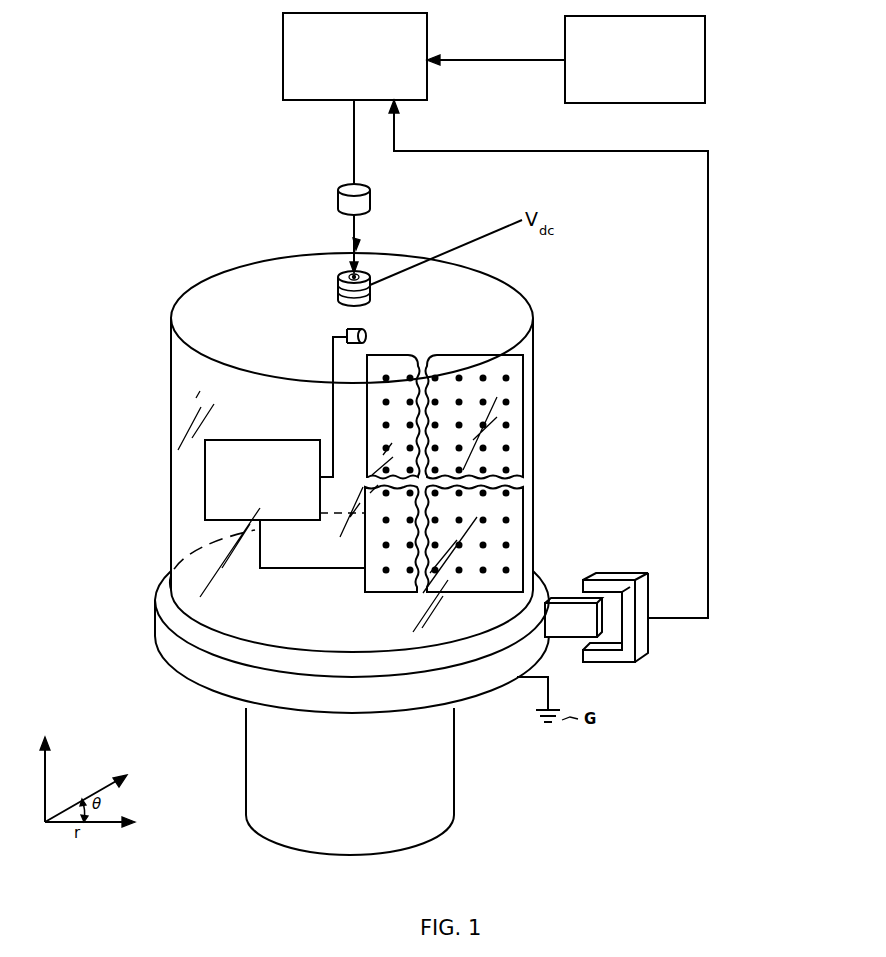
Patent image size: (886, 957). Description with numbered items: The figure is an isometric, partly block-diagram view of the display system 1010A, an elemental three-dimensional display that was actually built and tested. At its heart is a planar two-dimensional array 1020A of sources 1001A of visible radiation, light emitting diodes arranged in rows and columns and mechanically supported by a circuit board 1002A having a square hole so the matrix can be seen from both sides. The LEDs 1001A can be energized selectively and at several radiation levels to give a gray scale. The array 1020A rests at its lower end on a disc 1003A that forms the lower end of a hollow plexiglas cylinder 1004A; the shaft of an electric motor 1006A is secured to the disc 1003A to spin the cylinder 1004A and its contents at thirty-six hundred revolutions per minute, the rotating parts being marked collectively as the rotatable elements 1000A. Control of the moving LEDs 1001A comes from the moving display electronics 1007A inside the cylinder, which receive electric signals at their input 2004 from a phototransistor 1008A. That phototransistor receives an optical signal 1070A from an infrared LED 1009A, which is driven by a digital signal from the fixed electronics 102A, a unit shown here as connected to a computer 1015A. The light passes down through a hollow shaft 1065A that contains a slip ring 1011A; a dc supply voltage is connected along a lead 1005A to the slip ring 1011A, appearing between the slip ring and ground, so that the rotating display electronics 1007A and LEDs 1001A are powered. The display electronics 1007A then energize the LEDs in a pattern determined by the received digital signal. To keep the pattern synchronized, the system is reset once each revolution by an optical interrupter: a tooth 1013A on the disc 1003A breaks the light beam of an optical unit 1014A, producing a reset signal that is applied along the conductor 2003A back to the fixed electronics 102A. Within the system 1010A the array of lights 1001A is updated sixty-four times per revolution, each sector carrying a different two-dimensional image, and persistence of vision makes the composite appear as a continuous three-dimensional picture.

The fixed electronics 102A is at (283, 42).
The computer 1015A is at (705, 74).
The conductor 2003A is at (708, 225).
The infrared LED 1009A is at (372, 197).
The optical signal 1070A is at (372, 246).
The hollow plexiglas cylinder 1004A is at (170, 489).
The lead 1005A is at (460, 253).
The slip ring 1011A is at (337, 305).
The hollow shaft 1065A is at (338, 291).
The phototransistor 1008A is at (366, 336).
The input 2004 is at (333, 352).
The display electronics 1007A is at (253, 442).
The planar two-dimensional array 1020A is at (482, 493).
The circuit board 1002A is at (398, 598).
The sources of electromagnetic radiation 1001A is at (510, 378).
The rotatable elements 1000A is at (203, 695).
The disc 1003A is at (473, 687).
The electric motor 1006A is at (285, 830).
The tooth 1013A is at (558, 600).
The optical unit 1014A is at (648, 652).
The display system 1010A is at (625, 708).